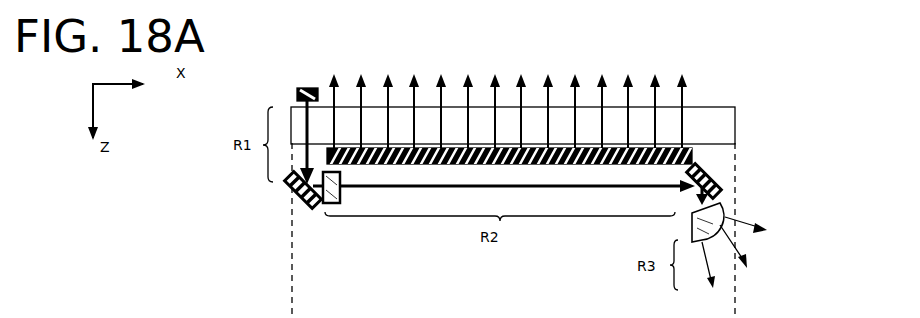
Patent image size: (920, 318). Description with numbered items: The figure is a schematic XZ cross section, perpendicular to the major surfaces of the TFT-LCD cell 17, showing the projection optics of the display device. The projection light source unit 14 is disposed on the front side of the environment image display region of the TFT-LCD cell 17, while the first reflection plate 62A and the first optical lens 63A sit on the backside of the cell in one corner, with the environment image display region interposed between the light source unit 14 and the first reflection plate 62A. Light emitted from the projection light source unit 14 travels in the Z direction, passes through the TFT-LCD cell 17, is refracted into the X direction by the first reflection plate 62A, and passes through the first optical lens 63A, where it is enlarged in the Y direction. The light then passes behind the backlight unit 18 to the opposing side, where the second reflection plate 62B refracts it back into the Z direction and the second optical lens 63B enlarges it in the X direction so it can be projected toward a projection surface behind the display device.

The projection light source unit 14 is at (297, 91).
The TFT-LCD cell 17 is at (735, 122).
The backlight unit 18 is at (692, 143).
The first reflection plate 62A is at (293, 317).
The first optical lens 63A is at (280, 317).
The second reflection plate 62B is at (720, 195).
The second optical lens 63B is at (723, 223).